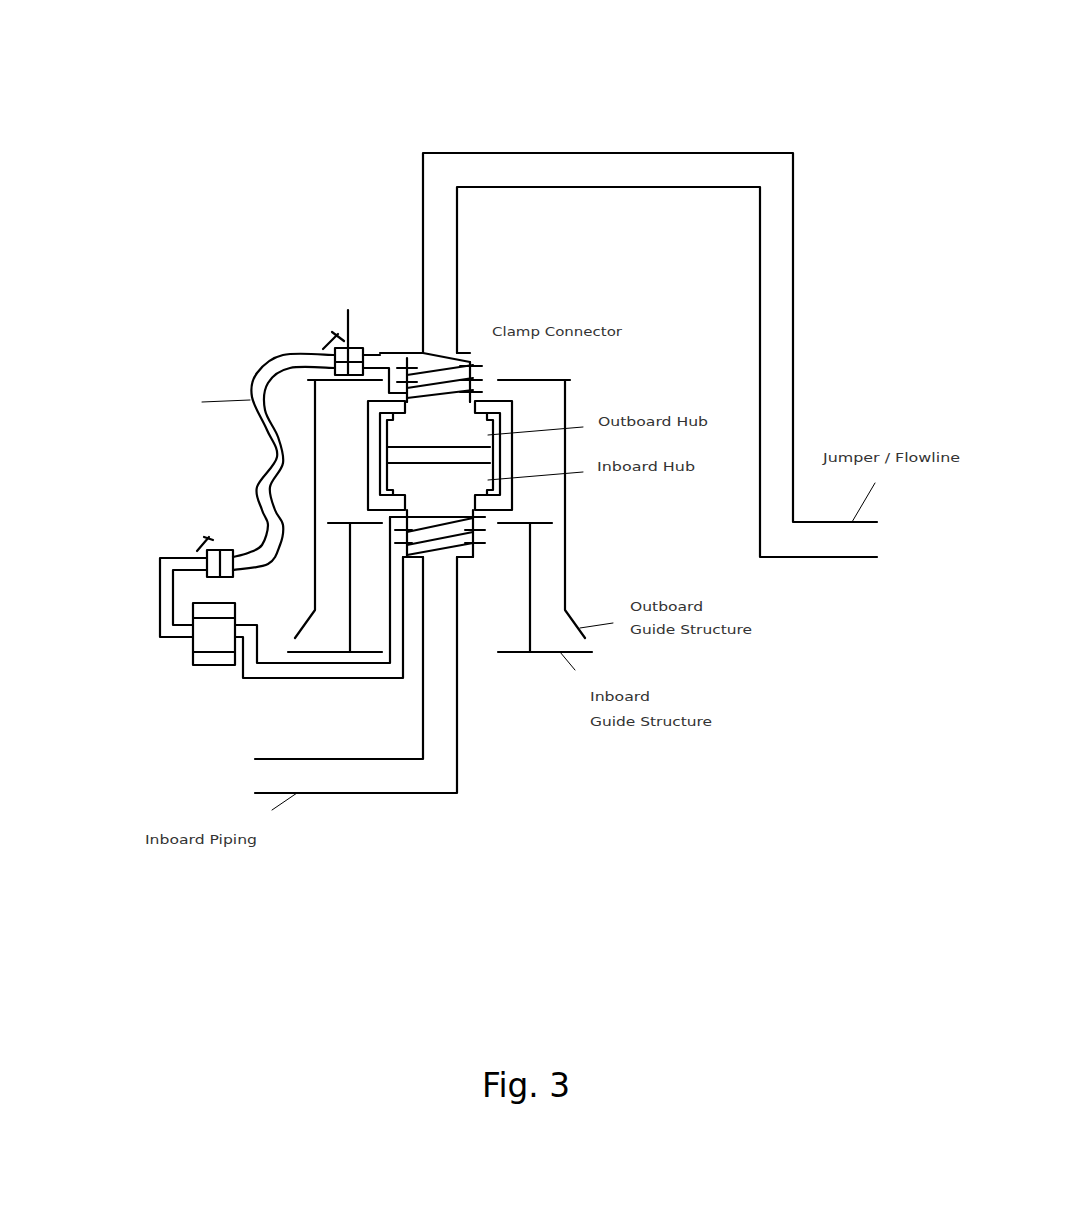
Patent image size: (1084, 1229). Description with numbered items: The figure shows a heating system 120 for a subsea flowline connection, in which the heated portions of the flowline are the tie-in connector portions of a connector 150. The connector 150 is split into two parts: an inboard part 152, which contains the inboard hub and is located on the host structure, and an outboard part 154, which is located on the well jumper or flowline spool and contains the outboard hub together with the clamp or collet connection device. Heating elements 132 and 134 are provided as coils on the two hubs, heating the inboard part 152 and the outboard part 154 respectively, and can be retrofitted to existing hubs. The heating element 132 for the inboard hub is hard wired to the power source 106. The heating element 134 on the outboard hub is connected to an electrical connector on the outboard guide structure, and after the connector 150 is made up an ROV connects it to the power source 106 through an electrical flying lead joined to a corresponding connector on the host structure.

The heating system 120 is at (241, 288).
The heating element 134 is at (420, 377).
The outboard part 154 is at (465, 352).
The connector 150 is at (241, 467).
The inboard part 152 is at (511, 526).
The heating element 132 is at (463, 548).
The power source 106 is at (207, 647).